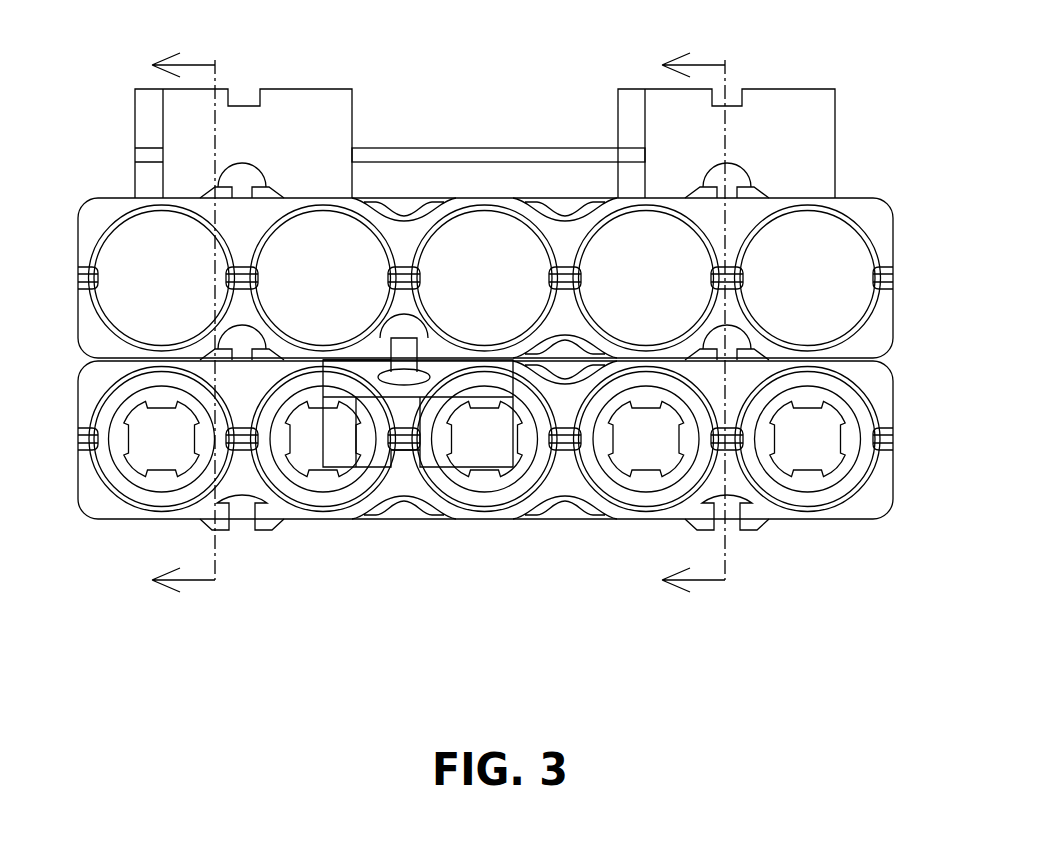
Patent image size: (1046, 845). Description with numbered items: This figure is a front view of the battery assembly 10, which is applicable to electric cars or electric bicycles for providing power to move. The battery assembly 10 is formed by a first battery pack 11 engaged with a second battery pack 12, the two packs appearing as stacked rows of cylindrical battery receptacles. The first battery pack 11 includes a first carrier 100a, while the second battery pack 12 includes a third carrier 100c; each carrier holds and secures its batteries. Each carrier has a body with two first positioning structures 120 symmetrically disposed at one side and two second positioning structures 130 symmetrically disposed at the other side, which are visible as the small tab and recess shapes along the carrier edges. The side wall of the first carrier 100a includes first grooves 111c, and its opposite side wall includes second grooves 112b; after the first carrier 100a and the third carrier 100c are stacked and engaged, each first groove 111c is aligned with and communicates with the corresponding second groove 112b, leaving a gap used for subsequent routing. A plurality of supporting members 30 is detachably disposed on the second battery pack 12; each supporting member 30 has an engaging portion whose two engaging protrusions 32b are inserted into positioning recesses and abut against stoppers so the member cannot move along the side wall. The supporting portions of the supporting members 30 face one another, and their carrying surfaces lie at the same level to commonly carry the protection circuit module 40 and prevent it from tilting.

The battery assembly 10 is at (917, 716).
The first battery pack 11 is at (64, 503).
The second battery pack 12 is at (54, 216).
The supporting member 30 is at (337, 110).
The engaging protrusion 32b is at (382, 356).
The protection circuit module 40 is at (484, 155).
The first carrier 100a is at (870, 500).
The third carrier 100c is at (871, 212).
The first groove 111c is at (416, 379).
The second groove 112b is at (404, 344).
The first positioning structure 120 is at (703, 336).
The second positioning structure 130 is at (738, 336).